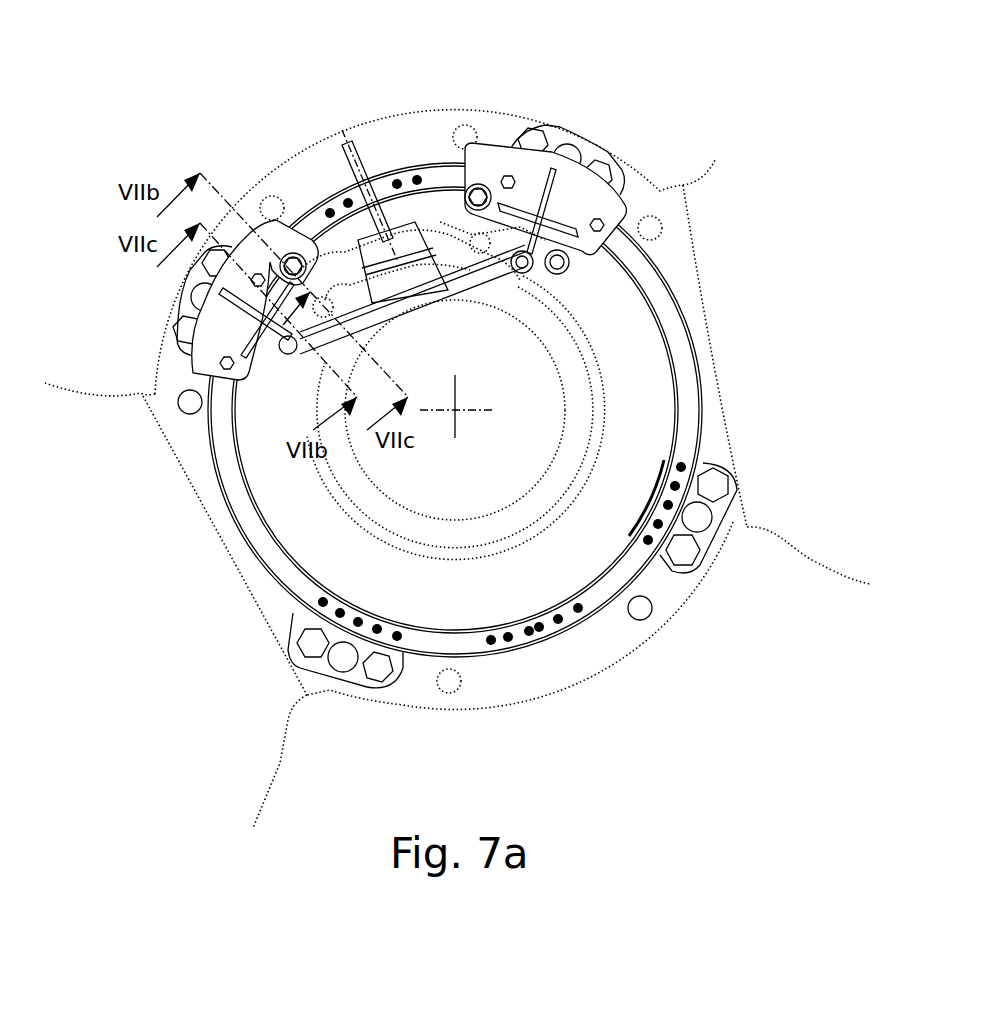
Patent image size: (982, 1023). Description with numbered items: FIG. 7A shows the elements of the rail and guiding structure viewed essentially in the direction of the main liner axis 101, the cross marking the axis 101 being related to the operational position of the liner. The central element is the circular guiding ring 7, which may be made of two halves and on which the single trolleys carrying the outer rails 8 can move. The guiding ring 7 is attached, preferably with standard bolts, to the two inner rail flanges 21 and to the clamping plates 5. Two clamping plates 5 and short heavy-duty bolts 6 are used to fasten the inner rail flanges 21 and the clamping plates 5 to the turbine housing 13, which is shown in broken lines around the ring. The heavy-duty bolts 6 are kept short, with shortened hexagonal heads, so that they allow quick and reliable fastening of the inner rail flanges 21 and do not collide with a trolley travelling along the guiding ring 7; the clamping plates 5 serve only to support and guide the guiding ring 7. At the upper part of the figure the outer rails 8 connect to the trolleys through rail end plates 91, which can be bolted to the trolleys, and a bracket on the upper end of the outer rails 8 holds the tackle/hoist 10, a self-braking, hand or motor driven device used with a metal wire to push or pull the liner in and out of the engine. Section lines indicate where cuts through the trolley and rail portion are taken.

The clamping plate 5 is at (720, 513).
The heavy-duty bolt 6 is at (368, 670).
The guiding ring 7 is at (688, 398).
The outer rail 8 is at (283, 262).
The tackle/hoist 10 is at (410, 228).
The turbine housing 13 is at (707, 300).
The inner rail flange 21 is at (177, 307).
The rail end plate 91 is at (497, 160).
The main liner axis 101 is at (457, 405).